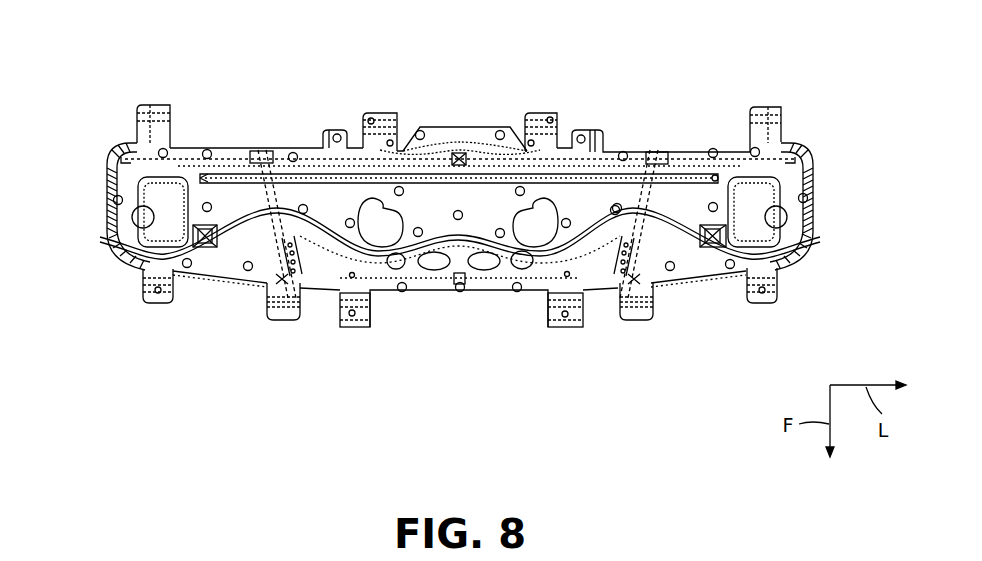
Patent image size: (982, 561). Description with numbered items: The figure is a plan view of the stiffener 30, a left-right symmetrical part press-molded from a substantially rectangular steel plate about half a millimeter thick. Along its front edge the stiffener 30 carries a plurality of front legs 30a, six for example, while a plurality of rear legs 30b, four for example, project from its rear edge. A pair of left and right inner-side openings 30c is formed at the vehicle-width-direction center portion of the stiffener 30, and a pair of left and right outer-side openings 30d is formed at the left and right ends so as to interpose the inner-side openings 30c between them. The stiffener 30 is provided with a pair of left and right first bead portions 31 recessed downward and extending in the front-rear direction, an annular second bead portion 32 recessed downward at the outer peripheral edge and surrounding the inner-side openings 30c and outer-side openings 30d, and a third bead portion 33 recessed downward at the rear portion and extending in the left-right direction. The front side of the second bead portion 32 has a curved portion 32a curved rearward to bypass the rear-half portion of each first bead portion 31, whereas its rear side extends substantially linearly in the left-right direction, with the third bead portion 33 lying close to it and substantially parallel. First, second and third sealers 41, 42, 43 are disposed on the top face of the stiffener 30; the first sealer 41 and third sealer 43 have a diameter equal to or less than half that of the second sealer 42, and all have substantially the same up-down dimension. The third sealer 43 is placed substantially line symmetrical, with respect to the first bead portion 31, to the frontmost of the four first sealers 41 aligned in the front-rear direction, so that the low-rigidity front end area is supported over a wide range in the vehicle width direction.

The stiffener 30 is at (114, 103).
The front legs 30a is at (158, 305).
The rear legs 30b is at (363, 113).
The inner-side openings 30c is at (527, 218).
The outer-side openings 30d is at (130, 244).
The first bead portions 31 is at (273, 262).
The second bead portion 32 is at (118, 175).
The curved portion 32a is at (277, 211).
The third bead portion 33 is at (632, 180).
The first sealer 41 is at (301, 258).
The second sealer 42 is at (501, 131).
The third sealer 43 is at (264, 283).